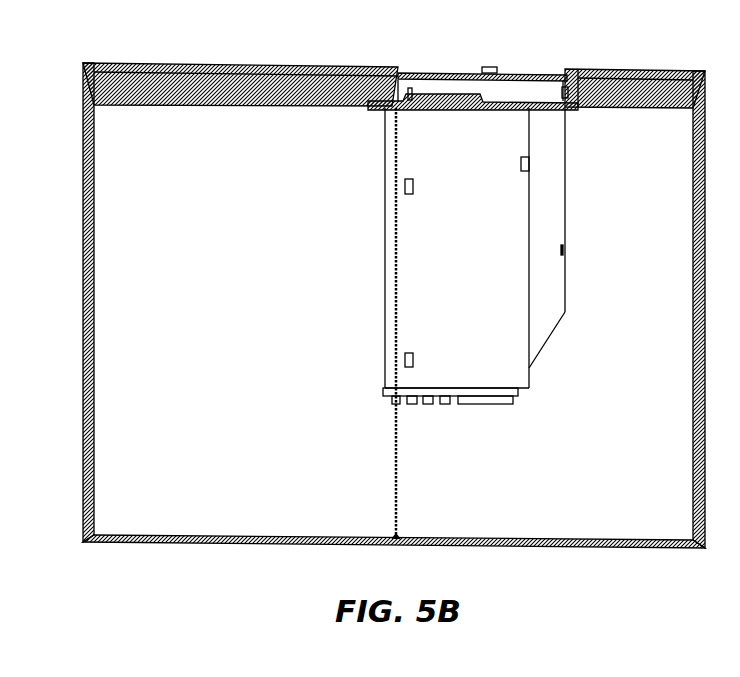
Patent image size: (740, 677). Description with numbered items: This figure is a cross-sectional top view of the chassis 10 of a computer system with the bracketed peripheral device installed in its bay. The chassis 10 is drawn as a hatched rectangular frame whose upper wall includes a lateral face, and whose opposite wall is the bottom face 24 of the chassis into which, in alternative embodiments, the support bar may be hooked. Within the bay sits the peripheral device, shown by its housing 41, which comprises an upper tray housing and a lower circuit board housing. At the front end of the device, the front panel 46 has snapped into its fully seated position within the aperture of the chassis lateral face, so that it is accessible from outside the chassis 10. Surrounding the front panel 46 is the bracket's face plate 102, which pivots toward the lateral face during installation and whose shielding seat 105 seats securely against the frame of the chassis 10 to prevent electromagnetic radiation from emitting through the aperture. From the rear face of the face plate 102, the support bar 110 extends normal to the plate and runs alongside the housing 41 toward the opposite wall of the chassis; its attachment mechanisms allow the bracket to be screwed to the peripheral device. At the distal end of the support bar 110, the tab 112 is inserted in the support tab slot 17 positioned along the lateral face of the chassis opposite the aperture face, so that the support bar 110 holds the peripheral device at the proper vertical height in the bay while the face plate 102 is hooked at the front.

The chassis 10 is at (371, 305).
The support tab slot 17 is at (392, 539).
The bottom face 24 is at (215, 69).
The housing 41 is at (513, 275).
The front panel 46 is at (458, 68).
The face plate 102 is at (606, 101).
The shielding seat 105 is at (522, 72).
The support bar 110 is at (400, 460).
The tab 112 is at (398, 539).